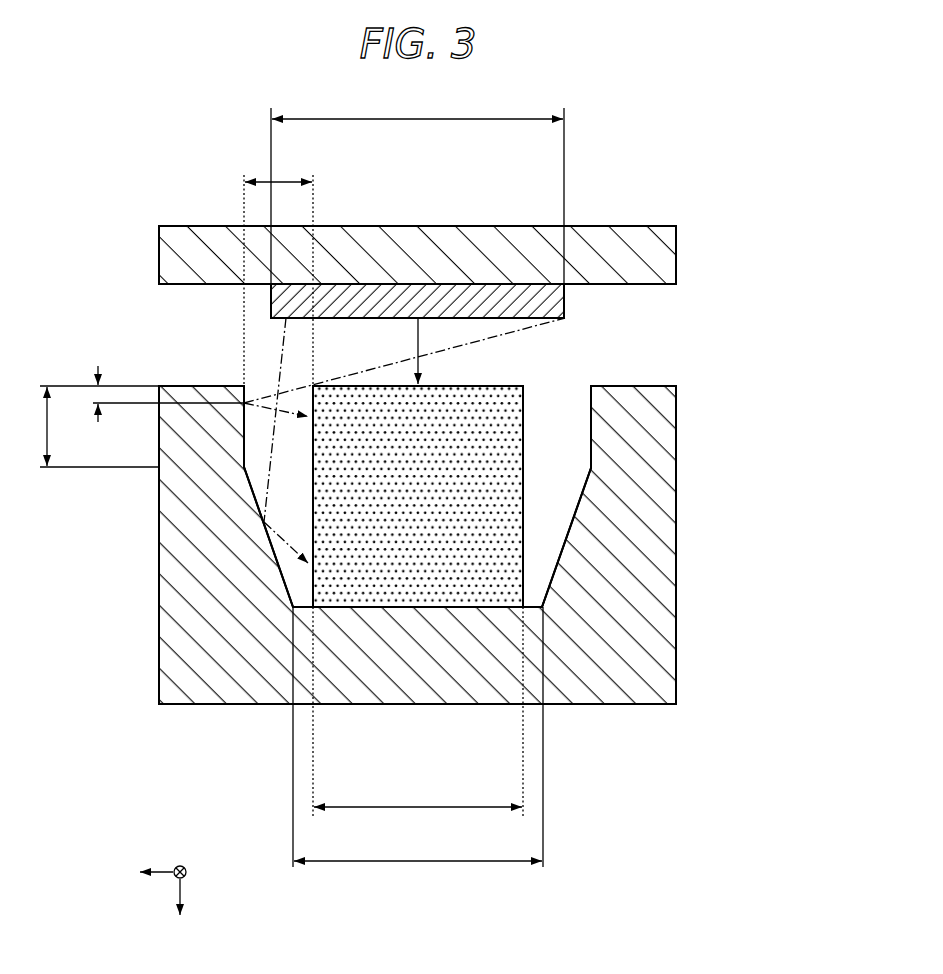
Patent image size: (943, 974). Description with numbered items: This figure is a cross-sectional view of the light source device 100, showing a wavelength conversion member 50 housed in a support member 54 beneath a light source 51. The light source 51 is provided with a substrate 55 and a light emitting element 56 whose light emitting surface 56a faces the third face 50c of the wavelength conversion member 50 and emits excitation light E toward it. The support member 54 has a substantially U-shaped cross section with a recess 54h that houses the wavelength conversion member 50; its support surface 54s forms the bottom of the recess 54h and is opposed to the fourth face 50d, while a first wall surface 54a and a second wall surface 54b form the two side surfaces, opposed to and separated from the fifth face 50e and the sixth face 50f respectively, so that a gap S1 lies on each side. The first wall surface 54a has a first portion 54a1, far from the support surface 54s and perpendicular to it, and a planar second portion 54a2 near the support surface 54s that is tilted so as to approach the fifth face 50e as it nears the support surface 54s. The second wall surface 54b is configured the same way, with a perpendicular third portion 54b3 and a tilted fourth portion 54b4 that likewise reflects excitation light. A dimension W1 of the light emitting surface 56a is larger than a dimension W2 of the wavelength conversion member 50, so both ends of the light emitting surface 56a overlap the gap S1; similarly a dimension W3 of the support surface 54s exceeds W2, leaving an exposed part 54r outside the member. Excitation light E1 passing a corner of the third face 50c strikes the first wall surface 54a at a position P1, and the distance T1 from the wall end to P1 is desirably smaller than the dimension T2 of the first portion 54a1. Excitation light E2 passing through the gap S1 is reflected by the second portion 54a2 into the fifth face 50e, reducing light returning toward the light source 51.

The light source device 100 is at (166, 192).
The light source 51 is at (649, 211).
The substrate 55 is at (594, 232).
The light emitting element 56 is at (398, 300).
The light emitting surface 56a is at (466, 318).
The support member 54 is at (683, 664).
The first wall surface 54a is at (154, 475).
The first portion 54a1 is at (244, 437).
The second portion 54a2 is at (292, 568).
The second wall surface 54b is at (692, 468).
The third portion 54b3 is at (591, 404).
The fourth portion 54b4 is at (566, 552).
The exposed part 54r is at (541, 597).
The support surface 54s is at (488, 607).
The recess 54h is at (567, 384).
The wavelength conversion member 50 is at (508, 445).
The third face 50c is at (505, 386).
The fourth face 50d is at (385, 607).
The fifth face 50e is at (312, 502).
The sixth face 50f is at (525, 498).
The excitation light E is at (425, 357).
The excitation light E1 is at (400, 362).
The excitation light E2 is at (283, 333).
The position P1 is at (244, 402).
The dimension W1 is at (417, 202).
The dimension W2 is at (418, 725).
The dimension W3 is at (418, 752).
The gap S1 is at (258, 180).
The distance T1 is at (142, 394).
The dimension T2 is at (83, 427).